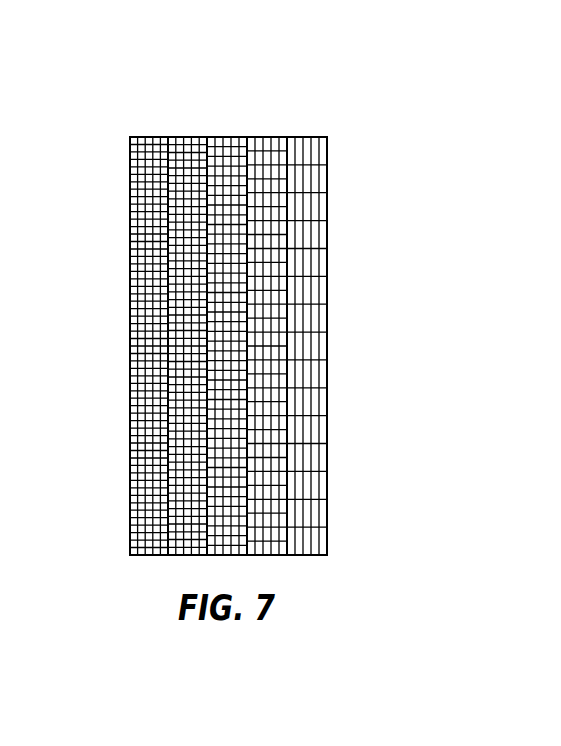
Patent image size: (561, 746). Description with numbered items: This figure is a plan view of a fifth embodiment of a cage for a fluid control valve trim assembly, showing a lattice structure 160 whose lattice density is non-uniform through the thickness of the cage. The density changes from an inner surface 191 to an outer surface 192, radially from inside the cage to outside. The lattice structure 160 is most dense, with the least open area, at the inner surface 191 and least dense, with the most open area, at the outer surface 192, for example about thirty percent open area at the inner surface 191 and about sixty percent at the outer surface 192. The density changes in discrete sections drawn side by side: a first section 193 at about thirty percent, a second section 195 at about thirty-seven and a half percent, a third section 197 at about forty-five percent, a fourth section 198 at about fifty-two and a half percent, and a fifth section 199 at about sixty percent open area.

The lattice structure 160 is at (382, 135).
The inner surface 191 is at (130, 194).
The outer surface 192 is at (327, 197).
The first section 193 is at (153, 137).
The second section 195 is at (195, 137).
The third section 197 is at (230, 137).
The fourth section 198 is at (268, 137).
The fifth section 199 is at (310, 137).